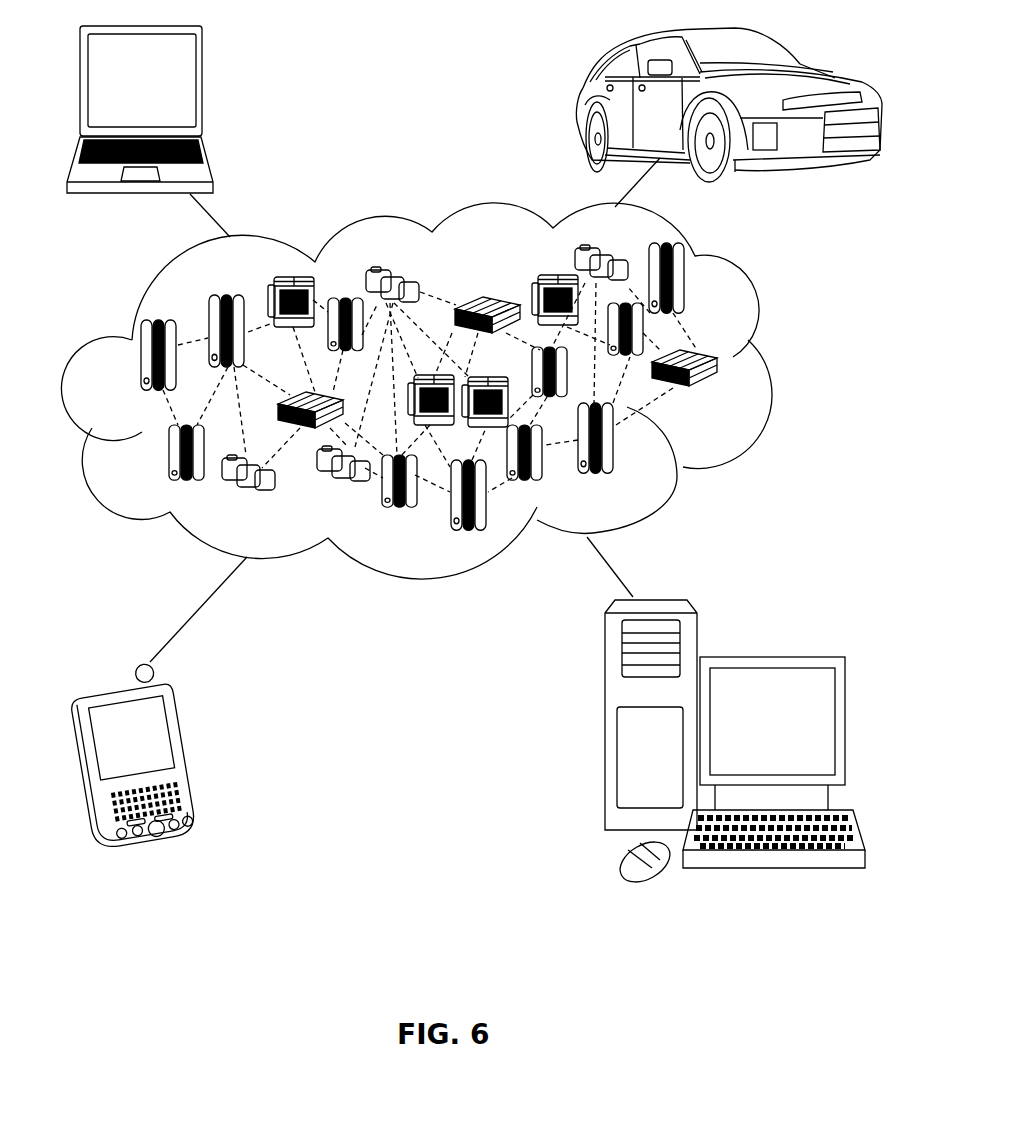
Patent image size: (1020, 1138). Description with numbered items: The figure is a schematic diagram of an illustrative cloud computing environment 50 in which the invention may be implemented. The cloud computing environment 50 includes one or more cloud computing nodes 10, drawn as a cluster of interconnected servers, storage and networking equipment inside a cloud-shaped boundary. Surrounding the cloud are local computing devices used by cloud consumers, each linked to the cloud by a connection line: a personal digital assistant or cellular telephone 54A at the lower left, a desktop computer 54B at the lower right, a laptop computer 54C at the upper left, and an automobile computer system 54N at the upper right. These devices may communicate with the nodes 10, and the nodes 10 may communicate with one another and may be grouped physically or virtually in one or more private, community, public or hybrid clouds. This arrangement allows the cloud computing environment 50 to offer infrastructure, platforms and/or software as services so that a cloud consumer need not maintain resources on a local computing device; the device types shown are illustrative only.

The cloud computing nodes 10 is at (471, 386).
The cloud computing environment 50 is at (773, 365).
The personal digital assistant (PDA) or cellular telephone 54A is at (188, 753).
The desktop computer 54B is at (770, 656).
The laptop computer 54C is at (203, 87).
The automobile computer system 54N is at (583, 108).